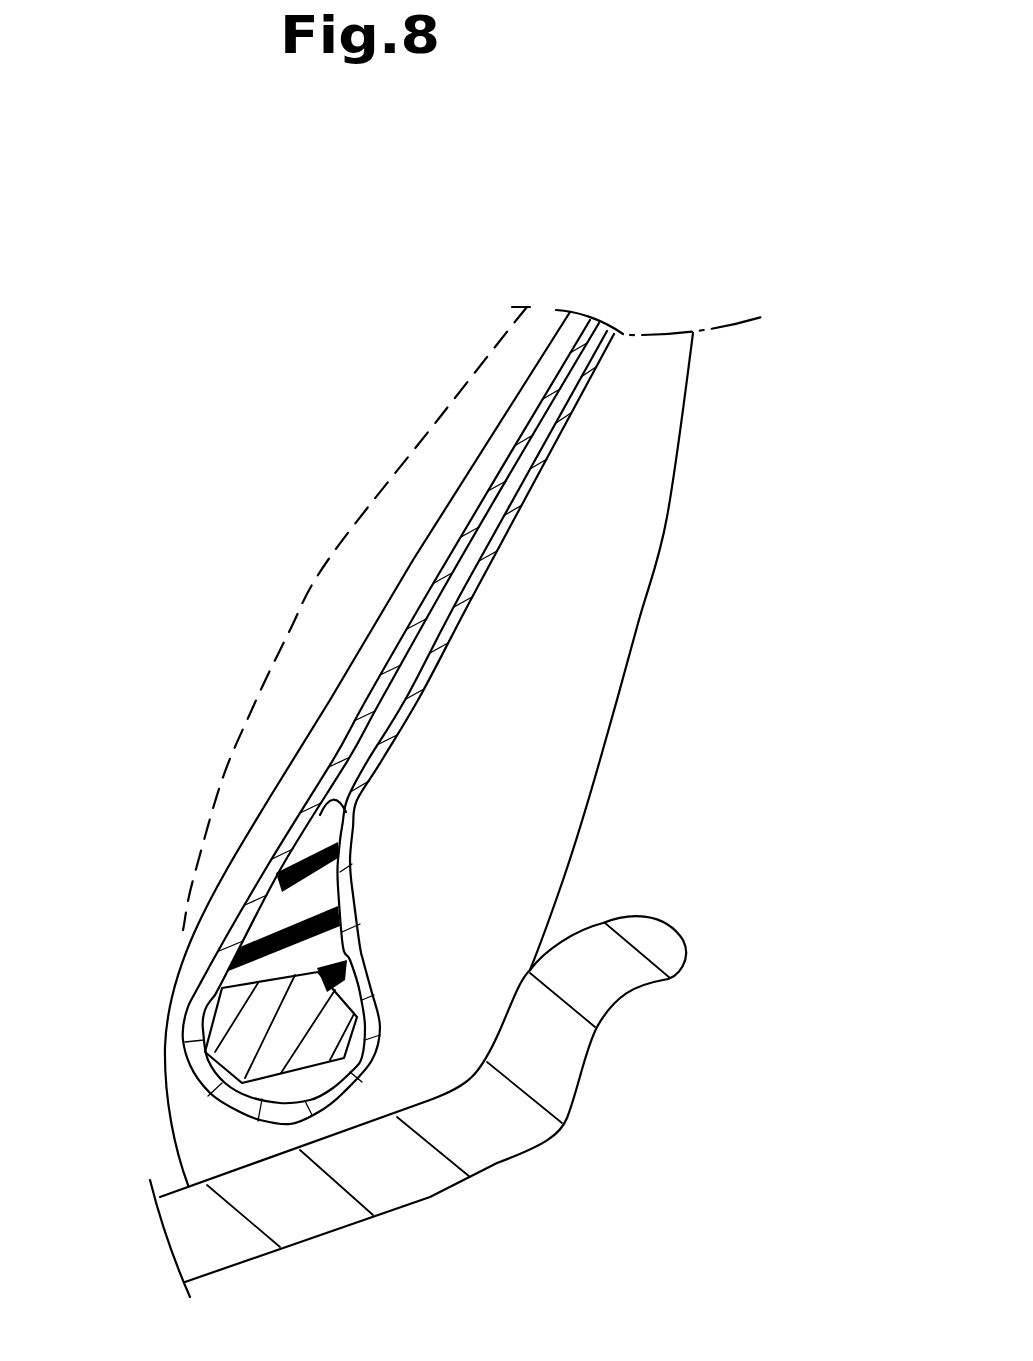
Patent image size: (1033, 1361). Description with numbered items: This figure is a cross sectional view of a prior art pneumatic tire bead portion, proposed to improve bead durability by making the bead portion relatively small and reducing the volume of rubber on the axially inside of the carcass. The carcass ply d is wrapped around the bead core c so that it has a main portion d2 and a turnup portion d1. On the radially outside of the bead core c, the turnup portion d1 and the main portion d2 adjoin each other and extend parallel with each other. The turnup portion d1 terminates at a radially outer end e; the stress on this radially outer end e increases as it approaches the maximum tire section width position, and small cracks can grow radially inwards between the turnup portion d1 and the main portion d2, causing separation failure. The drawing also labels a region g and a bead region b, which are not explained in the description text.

The radially outer end e is at (578, 422).
The main portion d2 is at (478, 540).
The turnup portion d1 is at (485, 568).
The carcass ply d is at (808, 490).
The sidewall rubber g is at (370, 622).
The bead apex b is at (290, 903).
The bead core c is at (230, 1019).